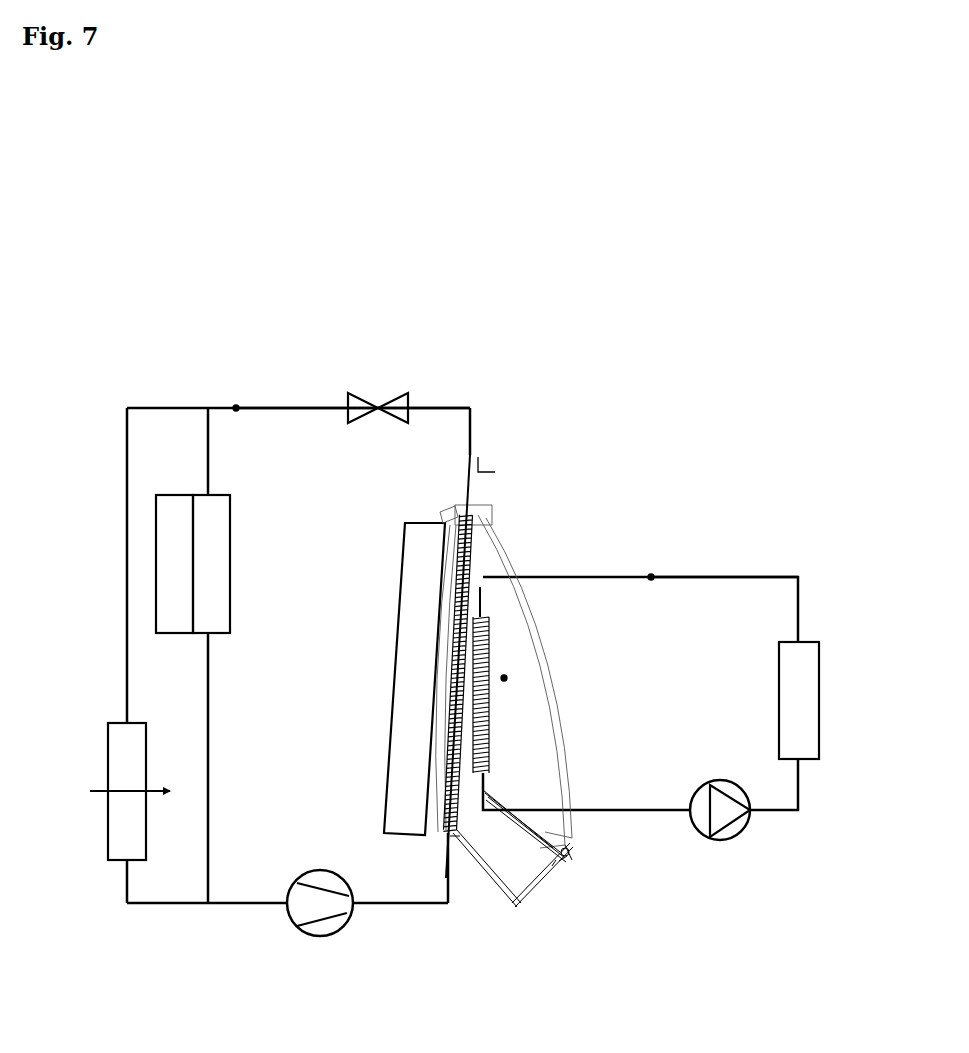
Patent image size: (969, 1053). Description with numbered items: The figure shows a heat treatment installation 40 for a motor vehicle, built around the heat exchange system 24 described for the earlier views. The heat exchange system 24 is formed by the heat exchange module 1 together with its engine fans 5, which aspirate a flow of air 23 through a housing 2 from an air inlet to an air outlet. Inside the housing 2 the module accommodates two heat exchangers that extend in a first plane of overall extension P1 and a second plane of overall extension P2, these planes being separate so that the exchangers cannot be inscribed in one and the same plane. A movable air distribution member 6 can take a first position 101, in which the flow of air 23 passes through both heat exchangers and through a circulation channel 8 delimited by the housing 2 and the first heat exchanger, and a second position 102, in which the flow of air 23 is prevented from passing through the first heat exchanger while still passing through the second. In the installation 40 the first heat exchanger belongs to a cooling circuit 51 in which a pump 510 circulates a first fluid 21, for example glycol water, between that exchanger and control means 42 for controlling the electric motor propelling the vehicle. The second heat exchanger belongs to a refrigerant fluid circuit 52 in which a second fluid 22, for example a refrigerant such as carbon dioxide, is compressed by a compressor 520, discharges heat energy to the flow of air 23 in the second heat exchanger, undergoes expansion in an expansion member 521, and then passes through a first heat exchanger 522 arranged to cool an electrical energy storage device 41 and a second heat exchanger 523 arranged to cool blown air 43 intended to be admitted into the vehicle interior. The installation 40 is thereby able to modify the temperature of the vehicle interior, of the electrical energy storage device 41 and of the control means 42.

The heat exchange module 1 is at (507, 506).
The housing 2 is at (518, 682).
The engine fans 5 is at (392, 688).
The air distribution member 6 is at (506, 838).
The circulation channel 8 is at (506, 678).
The first fluid 21 is at (651, 577).
The second fluid 22 is at (236, 406).
The flow of air 23 is at (536, 878).
The heat exchange system 24 is at (353, 528).
The heat treatment installation 40 is at (632, 521).
The electrical energy storage device 41 is at (174, 564).
The control means 42 is at (799, 700).
The blown air 43 is at (118, 791).
The cooling circuit 51 is at (734, 553).
The refrigerant fluid circuit 52 is at (307, 390).
The first position 101 is at (548, 870).
The second position 102 is at (565, 845).
The pump 510 is at (722, 840).
The compressor 520 is at (322, 937).
The expansion member 521 is at (378, 392).
The first heat exchanger of the refrigerant circuit 522 is at (211, 564).
The second heat exchanger of the refrigerant circuit 523 is at (127, 791).
The first plane of overall extension P1 is at (495, 472).
The second plane of overall extension P2 is at (485, 791).